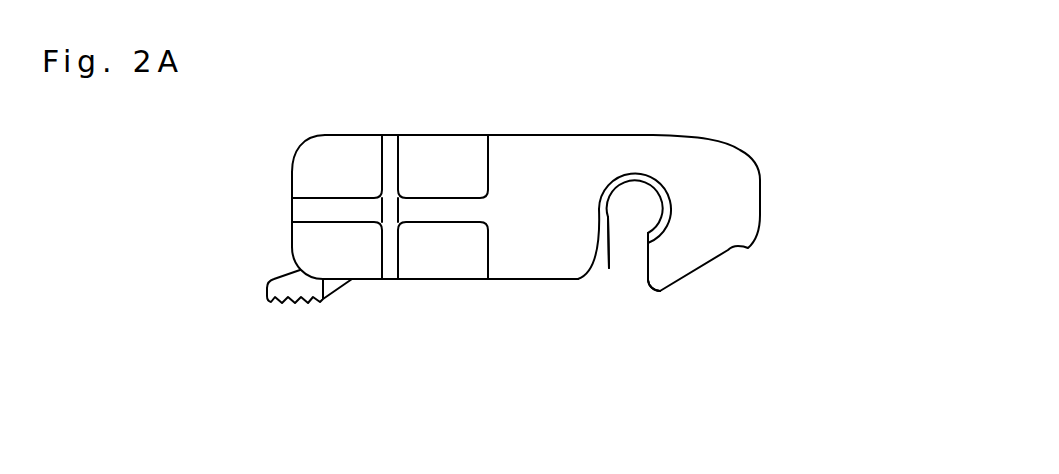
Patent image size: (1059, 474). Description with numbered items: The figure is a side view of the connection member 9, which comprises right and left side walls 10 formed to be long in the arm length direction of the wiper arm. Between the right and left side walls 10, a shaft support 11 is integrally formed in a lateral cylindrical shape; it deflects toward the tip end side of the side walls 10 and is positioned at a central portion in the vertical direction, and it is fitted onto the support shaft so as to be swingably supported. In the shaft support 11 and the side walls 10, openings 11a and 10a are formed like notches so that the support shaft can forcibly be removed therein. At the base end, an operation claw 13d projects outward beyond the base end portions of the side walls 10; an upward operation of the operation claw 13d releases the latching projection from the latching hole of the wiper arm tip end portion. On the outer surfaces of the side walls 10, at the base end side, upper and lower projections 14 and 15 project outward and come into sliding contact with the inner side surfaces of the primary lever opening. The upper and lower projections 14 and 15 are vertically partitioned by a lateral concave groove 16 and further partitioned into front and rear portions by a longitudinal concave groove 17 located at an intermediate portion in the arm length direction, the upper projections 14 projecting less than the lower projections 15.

The connection member 9 is at (728, 92).
The side walls 10 is at (732, 207).
The opening 10a is at (609, 268).
The shaft support 11 is at (662, 192).
The opening 11a is at (638, 290).
The operation claw 13d is at (290, 288).
The upper projections 14 is at (423, 155).
The lower projections 15 is at (442, 250).
The lateral concave groove 16 is at (440, 210).
The longitudinal concave groove 17 is at (388, 167).